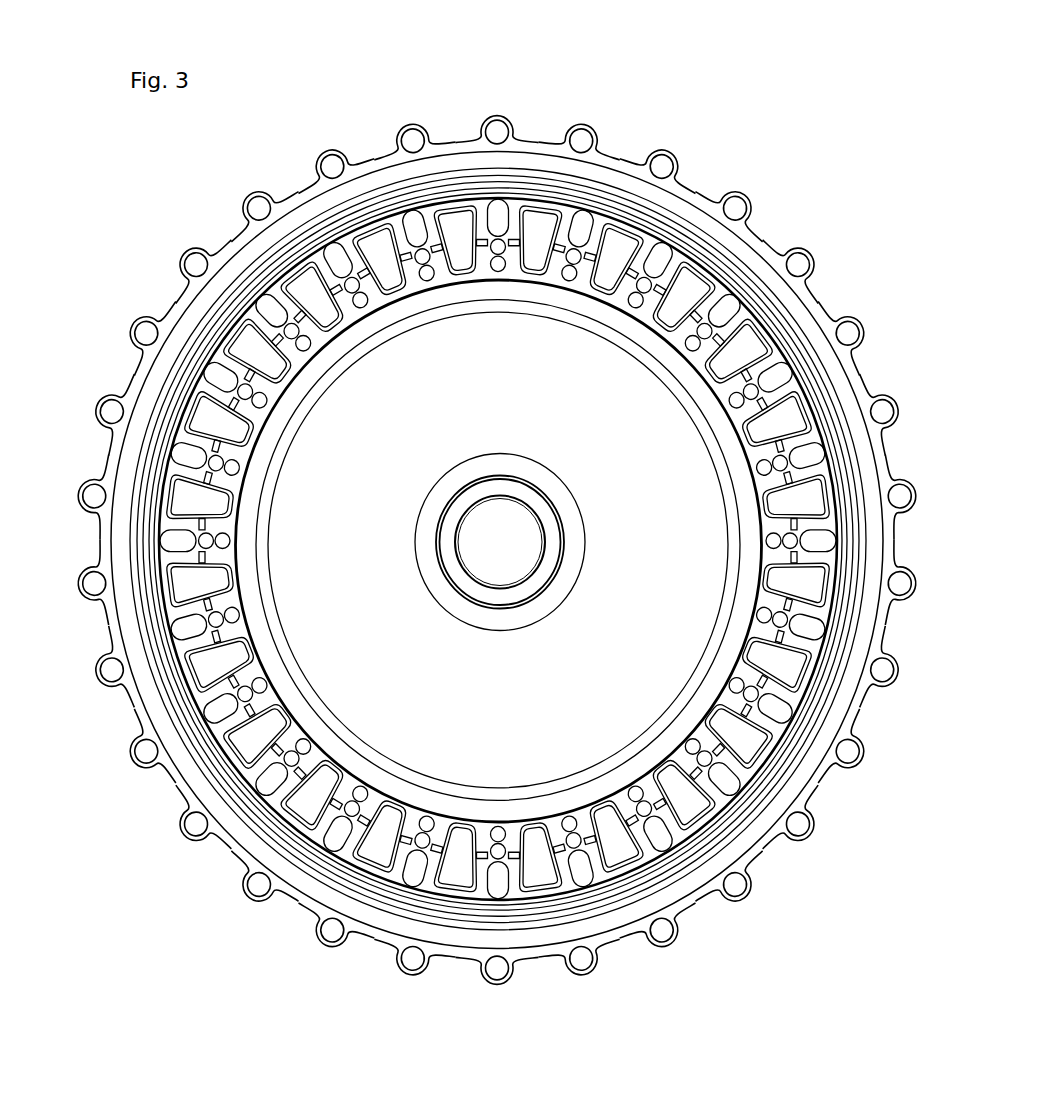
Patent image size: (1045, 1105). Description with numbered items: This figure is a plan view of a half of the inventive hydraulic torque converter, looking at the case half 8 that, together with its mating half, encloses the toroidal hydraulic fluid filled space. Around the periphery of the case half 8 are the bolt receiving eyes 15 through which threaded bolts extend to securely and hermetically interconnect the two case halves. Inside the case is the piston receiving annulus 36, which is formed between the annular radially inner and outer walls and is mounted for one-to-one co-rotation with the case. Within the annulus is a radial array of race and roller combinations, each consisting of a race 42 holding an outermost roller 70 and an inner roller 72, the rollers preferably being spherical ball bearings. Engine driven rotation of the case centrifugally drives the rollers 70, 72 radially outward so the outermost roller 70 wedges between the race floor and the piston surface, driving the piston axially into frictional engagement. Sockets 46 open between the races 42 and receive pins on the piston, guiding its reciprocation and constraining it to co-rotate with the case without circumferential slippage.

The case half 8 is at (610, 172).
The bolt receiving eye 15 is at (414, 136).
The piston receiving annulus 36 is at (187, 472).
The race 42 is at (665, 255).
The socket 46 is at (695, 292).
The roller 70 is at (180, 443).
The roller 72 is at (260, 403).